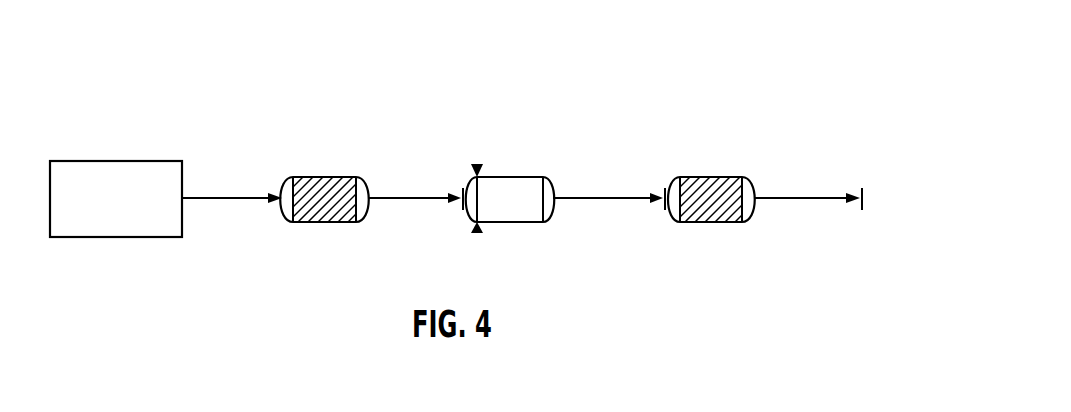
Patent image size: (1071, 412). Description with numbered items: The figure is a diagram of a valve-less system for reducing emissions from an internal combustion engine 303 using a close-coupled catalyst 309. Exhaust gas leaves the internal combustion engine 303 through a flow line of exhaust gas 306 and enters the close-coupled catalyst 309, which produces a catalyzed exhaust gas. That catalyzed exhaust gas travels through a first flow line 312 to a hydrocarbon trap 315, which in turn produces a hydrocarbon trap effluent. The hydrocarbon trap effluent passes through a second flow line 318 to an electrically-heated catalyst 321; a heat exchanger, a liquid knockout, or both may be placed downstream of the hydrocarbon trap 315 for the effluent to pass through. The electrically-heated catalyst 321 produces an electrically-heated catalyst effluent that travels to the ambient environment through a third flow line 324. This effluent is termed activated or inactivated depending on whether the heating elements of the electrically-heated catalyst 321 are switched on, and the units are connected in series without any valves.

The internal combustion engine 303 is at (120, 161).
The flow line of exhaust gas 306 is at (222, 197).
The close-coupled catalyst 309 is at (325, 177).
The first flow line 312 is at (413, 197).
The hydrocarbon trap 315 is at (511, 177).
The second flow line 318 is at (600, 197).
The electrically-heated catalyst 321 is at (711, 177).
The third flow line 324 is at (800, 197).